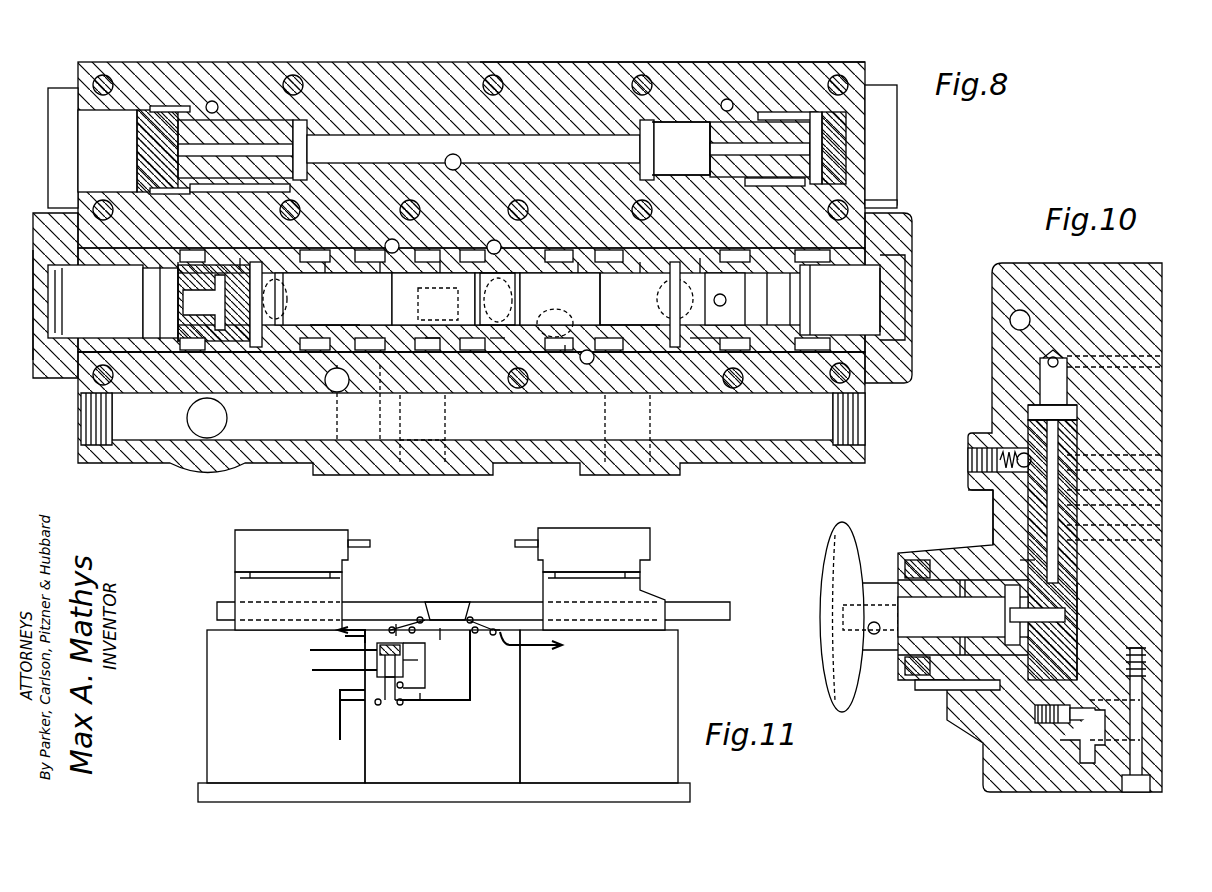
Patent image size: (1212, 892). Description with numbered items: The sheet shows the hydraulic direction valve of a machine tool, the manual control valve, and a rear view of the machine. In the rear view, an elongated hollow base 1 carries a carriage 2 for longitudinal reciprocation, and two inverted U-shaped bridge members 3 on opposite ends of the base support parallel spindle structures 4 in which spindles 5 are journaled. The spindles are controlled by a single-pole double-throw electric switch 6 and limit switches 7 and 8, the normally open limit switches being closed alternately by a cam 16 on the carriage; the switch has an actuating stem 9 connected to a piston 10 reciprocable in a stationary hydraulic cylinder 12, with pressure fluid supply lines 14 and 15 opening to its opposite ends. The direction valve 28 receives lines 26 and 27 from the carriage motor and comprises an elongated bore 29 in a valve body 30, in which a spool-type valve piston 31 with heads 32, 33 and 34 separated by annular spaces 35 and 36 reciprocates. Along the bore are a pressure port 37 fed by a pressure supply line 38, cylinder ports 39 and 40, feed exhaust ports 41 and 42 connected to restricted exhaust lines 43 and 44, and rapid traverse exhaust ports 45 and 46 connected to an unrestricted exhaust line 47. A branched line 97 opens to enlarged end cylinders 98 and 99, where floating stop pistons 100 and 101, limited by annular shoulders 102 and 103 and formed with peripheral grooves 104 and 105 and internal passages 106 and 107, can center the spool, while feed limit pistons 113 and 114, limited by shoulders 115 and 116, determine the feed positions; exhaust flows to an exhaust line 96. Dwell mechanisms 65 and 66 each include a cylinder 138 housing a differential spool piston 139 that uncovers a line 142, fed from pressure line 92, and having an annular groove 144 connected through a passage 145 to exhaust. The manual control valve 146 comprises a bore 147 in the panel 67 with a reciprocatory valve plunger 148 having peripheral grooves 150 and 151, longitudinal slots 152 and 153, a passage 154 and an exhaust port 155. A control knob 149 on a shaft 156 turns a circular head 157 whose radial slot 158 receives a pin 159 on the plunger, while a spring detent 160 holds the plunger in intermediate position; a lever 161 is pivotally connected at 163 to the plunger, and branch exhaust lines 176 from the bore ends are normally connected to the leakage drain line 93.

In FIG. 11, the base 1 is at (668, 700).
In FIG. 11, the carriage 2 is at (700, 605).
In FIG. 11, the bridge members 3 is at (235, 587).
In FIG. 11, the spindle structures 4 is at (290, 533).
In FIG. 11, the spindles 5 is at (362, 540).
In FIG. 11, the electric switch 6 is at (372, 668).
In FIG. 11, the limit switch 7 is at (406, 609).
In FIG. 11, the limit switch 8 is at (497, 611).
In FIG. 11, the actuating stem 9 is at (405, 685).
In FIG. 11, the piston 10 is at (412, 660).
In FIG. 11, the hydraulic cylinder 12 is at (412, 643).
In FIG. 8, the pressure fluid supply line 14 is at (286, 298).
In FIG. 11, the pressure fluid supply line 14 is at (312, 672).
In FIG. 8, the pressure fluid supply line 15 is at (656, 292).
In FIG. 11, the pressure fluid supply line 15 is at (318, 648).
In FIG. 11, the cam 16 is at (455, 602).
In FIG. 8, the fluid supply and discharge line 26 is at (462, 420).
In FIG. 8, the fluid supply and discharge line 27 is at (562, 300).
In FIG. 8, the direction valve 28 is at (937, 225).
In FIG. 8, the bore 29 is at (315, 325).
In FIG. 8, the valve body 30 is at (180, 390).
In FIG. 8, the valve piston 31 is at (326, 262).
In FIG. 8, the head 32 is at (380, 262).
In FIG. 8, the head 33 is at (490, 260).
In FIG. 8, the head 34 is at (642, 262).
In FIG. 8, the annular space 35 is at (438, 262).
In FIG. 8, the annular space 36 is at (578, 262).
In FIG. 8, the pressure port 37 is at (498, 348).
In FIG. 8, the pressure supply line 38 is at (518, 299).
In FIG. 8, the cylinder port 39 is at (435, 345).
In FIG. 8, the cylinder port 40 is at (565, 352).
In FIG. 8, the feed exhaust port 41 is at (433, 299).
In FIG. 8, the feed exhaust port 42 is at (607, 299).
In FIG. 8, the restricted exhaust line 43 is at (392, 240).
In FIG. 8, the restricted exhaust line 44 is at (587, 364).
In FIG. 8, the rapid traverse exhaust port 45 is at (333, 372).
In FIG. 8, the rapid traverse exhaust port 46 is at (628, 300).
In FIG. 8, the unrestricted exhaust line 47 is at (227, 418).
In FIG. 8, the dwell mechanism 65 is at (248, 118).
In FIG. 8, the dwell mechanism 66 is at (706, 115).
In FIG. 10, the panel 67 is at (1147, 255).
In FIG. 8, the pressure line 92 is at (216, 104).
In FIG. 10, the leakage drain line 93 is at (1030, 316).
In FIG. 8, the exhaust line 96 is at (455, 170).
In FIG. 8, the branched line 97 is at (190, 262).
In FIG. 8, the cylinder 98 is at (160, 262).
In FIG. 8, the cylinder 99 is at (790, 262).
In FIG. 8, the stop piston 100 is at (243, 258).
In FIG. 8, the stop piston 101 is at (700, 258).
In FIG. 8, the annular shoulder 102 is at (258, 262).
In FIG. 8, the annular shoulder 103 is at (675, 260).
In FIG. 8, the peripheral groove 104 is at (242, 361).
In FIG. 8, the peripheral groove 105 is at (705, 348).
In FIG. 8, the internal passage 106 is at (214, 303).
In FIG. 8, the internal passage 107 is at (725, 299).
In FIG. 8, the feed limit piston 113 is at (103, 262).
In FIG. 8, the feed limit piston 114 is at (835, 262).
In FIG. 8, the shoulder 115 is at (49, 294).
In FIG. 8, the shoulder 116 is at (905, 255).
In FIG. 8, the cylinder 138 is at (135, 192).
In FIG. 8, the differential spool piston 139 is at (160, 112).
In FIG. 8, the line 142 is at (135, 135).
In FIG. 8, the annular groove 144 is at (192, 112).
In FIG. 8, the passage 145 is at (235, 150).
In FIG. 10, the manual control valve 146 is at (1002, 528).
In FIG. 10, the bore 147 is at (1080, 412).
In FIG. 10, the valve plunger 148 is at (1080, 425).
In FIG. 10, the control knob 149 is at (830, 568).
In FIG. 10, the peripheral groove 150 is at (1028, 495).
In FIG. 10, the peripheral groove 151 is at (1035, 560).
In FIG. 10, the longitudinal slot 152 is at (1078, 513).
In FIG. 10, the longitudinal slot 153 is at (1080, 442).
In FIG. 10, the passage 154 is at (1080, 480).
In FIG. 10, the exhaust port 155 is at (1090, 583).
In FIG. 10, the shaft 156 is at (935, 612).
In FIG. 10, the circular head 157 is at (1015, 585).
In FIG. 10, the radial slot 158 is at (1030, 640).
In FIG. 10, the pin 159 is at (1082, 603).
In FIG. 10, the spring detent 160 is at (1022, 453).
In FIG. 10, the lever 161 is at (1080, 685).
In FIG. 10, the pivotal connection 163 is at (1087, 731).
In FIG. 10, the branch exhaust lines 176 is at (1114, 349).